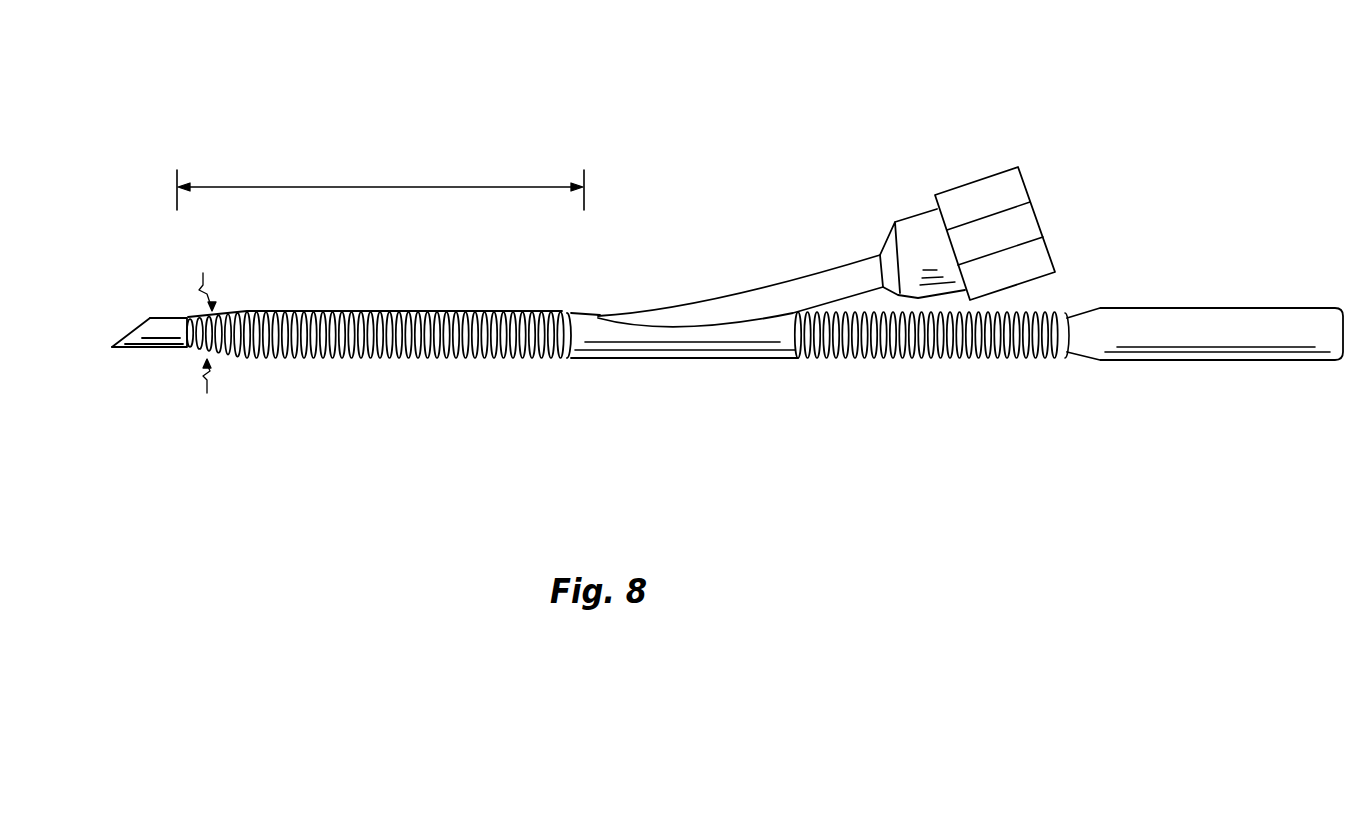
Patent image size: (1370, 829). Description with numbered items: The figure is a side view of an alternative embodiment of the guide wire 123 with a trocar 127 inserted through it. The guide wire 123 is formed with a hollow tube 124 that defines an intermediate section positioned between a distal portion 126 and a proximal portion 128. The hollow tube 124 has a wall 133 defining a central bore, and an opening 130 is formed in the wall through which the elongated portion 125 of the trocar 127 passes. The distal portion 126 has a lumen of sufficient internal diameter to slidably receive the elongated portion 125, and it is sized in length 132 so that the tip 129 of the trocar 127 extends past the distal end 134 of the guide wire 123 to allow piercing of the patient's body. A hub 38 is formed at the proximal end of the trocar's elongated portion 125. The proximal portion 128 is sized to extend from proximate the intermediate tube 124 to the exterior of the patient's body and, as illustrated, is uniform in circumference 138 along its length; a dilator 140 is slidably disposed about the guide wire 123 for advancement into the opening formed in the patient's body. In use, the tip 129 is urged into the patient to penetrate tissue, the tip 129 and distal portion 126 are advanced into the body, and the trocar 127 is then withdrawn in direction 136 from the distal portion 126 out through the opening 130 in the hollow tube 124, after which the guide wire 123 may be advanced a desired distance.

The hub 38 is at (988, 202).
The guide wire 123 is at (484, 300).
The hollow tube 124 is at (706, 362).
The elongated portion 125 is at (700, 312).
The distal portion 126 is at (395, 368).
The trocar 127 is at (810, 290).
The proximal portion 128 is at (961, 370).
The tip 129 is at (140, 330).
The opening 130 is at (617, 323).
The length 132 is at (360, 187).
The wall 133 is at (760, 337).
The distal end 134 is at (168, 357).
The direction 136 is at (351, 300).
The circumference 138 is at (1042, 364).
The dilator 140 is at (1218, 333).